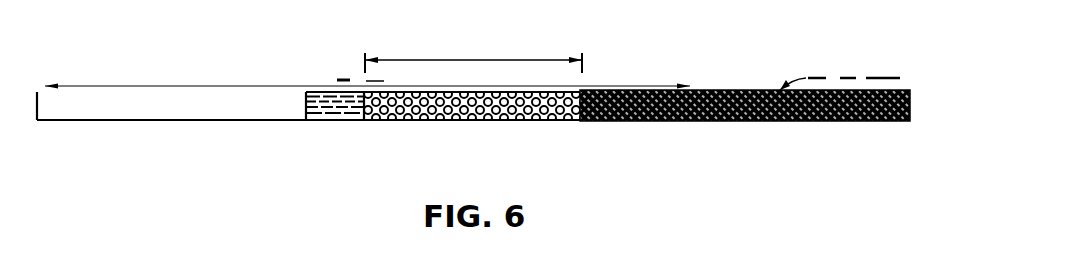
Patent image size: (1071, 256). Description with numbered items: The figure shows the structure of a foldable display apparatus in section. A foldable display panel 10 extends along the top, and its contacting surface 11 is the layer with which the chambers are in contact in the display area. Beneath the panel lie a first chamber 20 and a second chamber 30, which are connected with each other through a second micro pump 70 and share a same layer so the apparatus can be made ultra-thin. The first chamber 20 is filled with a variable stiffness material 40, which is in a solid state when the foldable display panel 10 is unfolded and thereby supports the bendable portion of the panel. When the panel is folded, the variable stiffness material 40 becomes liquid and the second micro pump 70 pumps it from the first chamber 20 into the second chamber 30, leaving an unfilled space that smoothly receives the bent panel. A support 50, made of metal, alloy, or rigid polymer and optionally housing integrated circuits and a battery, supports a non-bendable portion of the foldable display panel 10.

The foldable display panel 10 is at (615, 75).
The contacting surface 11 is at (487, 100).
The first chamber 20 is at (408, 120).
The second chamber 30 is at (190, 120).
The variable stiffness material 40 is at (543, 105).
The support 50 is at (740, 121).
The second micro pump 70 is at (335, 104).